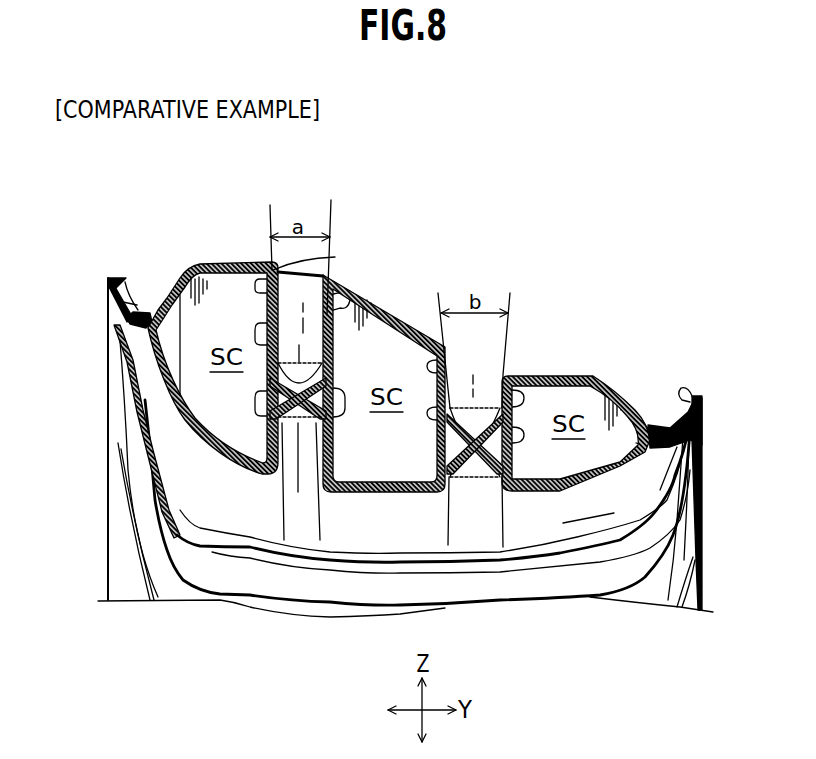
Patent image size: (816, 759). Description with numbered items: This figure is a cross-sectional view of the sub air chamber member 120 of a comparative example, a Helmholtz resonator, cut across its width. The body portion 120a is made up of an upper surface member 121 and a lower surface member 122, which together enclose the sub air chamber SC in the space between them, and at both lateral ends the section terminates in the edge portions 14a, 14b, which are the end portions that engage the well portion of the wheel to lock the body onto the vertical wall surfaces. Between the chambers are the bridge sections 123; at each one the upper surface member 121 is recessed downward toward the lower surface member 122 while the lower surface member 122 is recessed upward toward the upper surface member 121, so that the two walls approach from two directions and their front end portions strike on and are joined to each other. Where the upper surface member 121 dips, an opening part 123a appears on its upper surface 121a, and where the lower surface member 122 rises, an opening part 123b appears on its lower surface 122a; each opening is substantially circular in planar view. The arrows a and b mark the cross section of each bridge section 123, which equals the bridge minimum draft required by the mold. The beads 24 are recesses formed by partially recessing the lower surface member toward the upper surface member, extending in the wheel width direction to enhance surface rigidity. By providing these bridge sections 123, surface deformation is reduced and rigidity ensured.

The edge portion 14a is at (683, 392).
The edge portion 14b is at (128, 297).
The bead 24 is at (158, 584).
The sub air chamber member 120 is at (380, 410).
The body portion 120a is at (320, 272).
The upper surface member 121 is at (232, 315).
The upper surface 121a is at (217, 262).
The lower surface member 122 is at (380, 494).
The lower surface 122a is at (235, 470).
The bridge section 123 is at (367, 513).
The opening part 123a is at (335, 257).
The opening part 123b is at (272, 462).